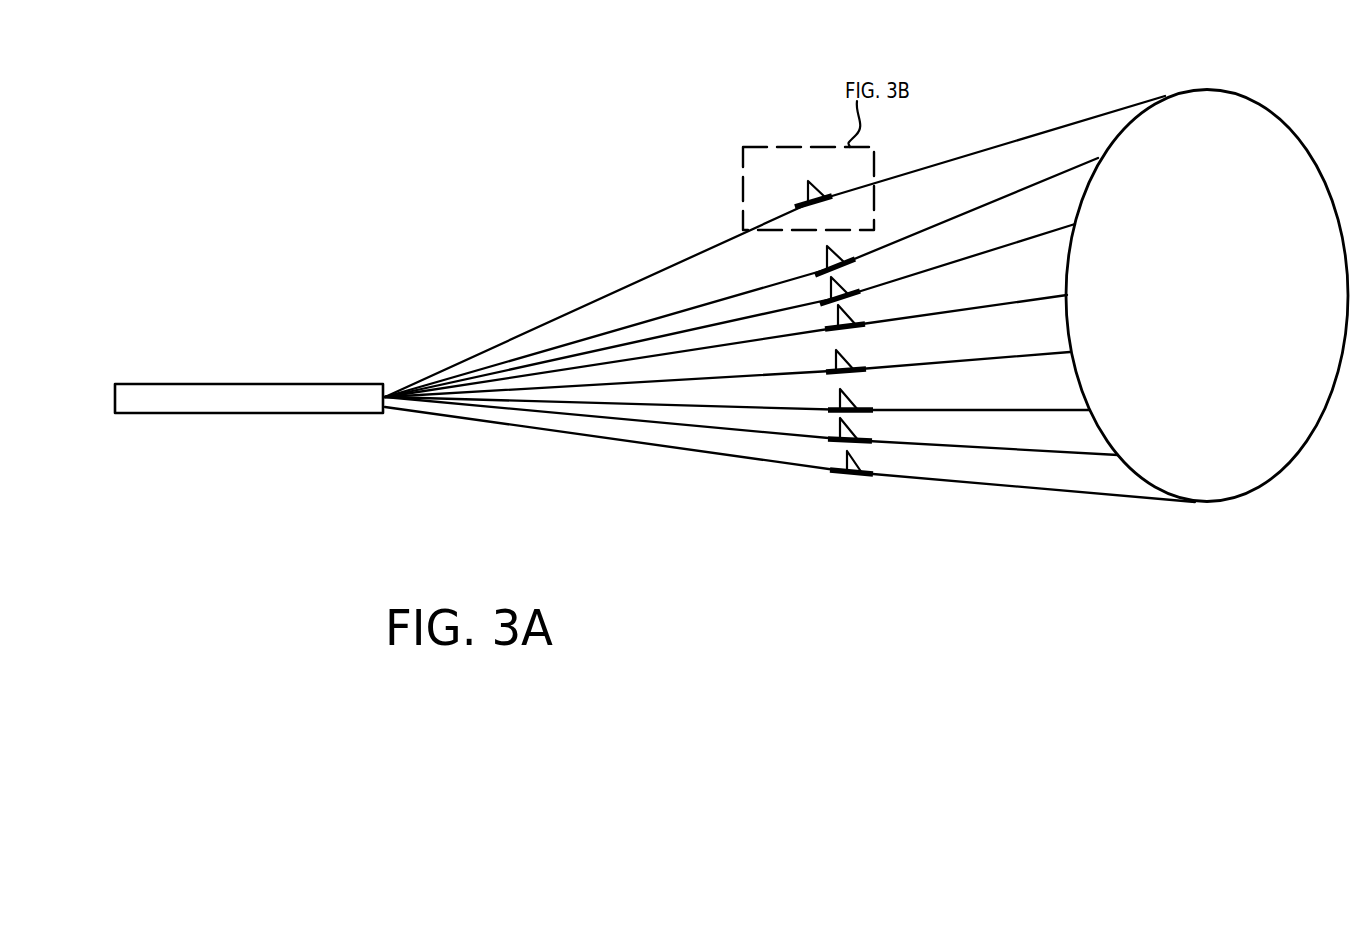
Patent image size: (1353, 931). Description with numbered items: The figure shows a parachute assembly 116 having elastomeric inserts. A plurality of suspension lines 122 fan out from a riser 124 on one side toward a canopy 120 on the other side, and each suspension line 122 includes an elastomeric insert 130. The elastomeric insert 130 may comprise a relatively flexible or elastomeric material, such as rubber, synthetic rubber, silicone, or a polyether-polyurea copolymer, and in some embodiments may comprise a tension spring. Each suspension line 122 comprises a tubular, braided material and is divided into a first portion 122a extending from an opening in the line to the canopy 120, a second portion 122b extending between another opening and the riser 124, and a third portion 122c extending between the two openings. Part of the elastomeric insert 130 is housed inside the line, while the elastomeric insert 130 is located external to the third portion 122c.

The parachute assembly 116 is at (342, 114).
The canopy 120 is at (1214, 305).
The suspension line 122 is at (790, 328).
The first portion 122a is at (975, 485).
The second portion 122b is at (745, 462).
The third portion 122c is at (852, 465).
The riser 124 is at (243, 397).
The elastomeric insert 130 is at (802, 212).